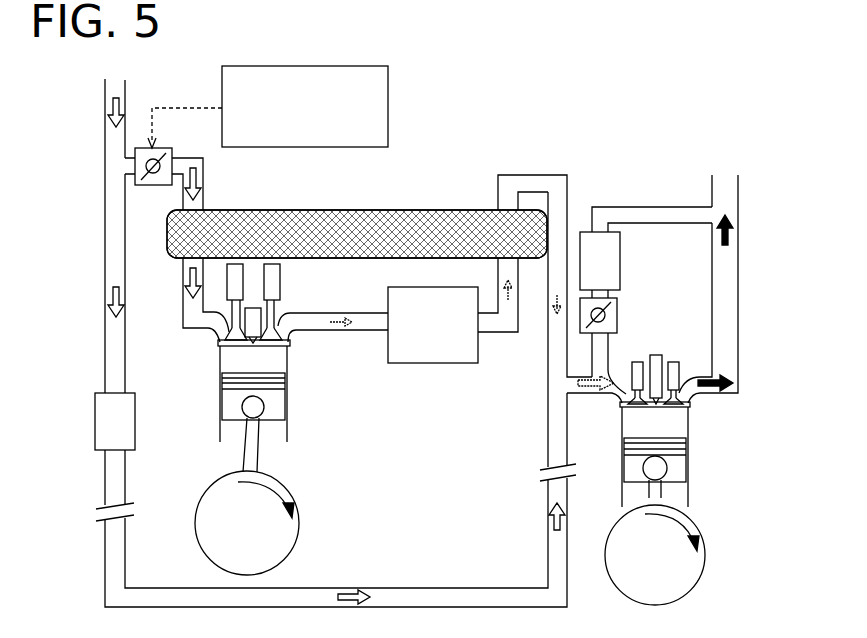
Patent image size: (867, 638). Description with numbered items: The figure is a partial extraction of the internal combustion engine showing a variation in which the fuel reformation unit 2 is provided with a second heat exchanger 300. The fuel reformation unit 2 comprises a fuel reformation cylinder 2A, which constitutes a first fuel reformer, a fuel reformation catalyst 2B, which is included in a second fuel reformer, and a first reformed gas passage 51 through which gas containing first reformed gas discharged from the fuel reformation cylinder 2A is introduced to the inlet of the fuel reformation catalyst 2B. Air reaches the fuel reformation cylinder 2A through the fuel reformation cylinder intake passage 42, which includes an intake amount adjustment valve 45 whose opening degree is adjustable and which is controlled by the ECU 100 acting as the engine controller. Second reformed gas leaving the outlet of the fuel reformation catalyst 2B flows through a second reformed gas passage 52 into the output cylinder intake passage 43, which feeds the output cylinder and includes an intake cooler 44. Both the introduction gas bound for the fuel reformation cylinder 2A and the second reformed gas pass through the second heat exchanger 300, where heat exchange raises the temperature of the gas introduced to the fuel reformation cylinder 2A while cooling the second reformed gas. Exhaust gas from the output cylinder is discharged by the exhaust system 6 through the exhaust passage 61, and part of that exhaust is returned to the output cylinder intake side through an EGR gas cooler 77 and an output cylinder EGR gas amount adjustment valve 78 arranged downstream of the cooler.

The ECU 100 is at (389, 112).
The second heat exchanger 300 is at (428, 210).
The intake amount adjustment valve 45 is at (155, 188).
The output cylinder intake passage 43 is at (110, 268).
The intake cooler 44 is at (95, 422).
The fuel reformation cylinder intake passage 42 is at (190, 332).
The fuel reformation unit 2 is at (336, 419).
The fuel reformation cylinder 2A is at (297, 398).
The fuel reformation catalyst 2B is at (441, 368).
The first reformed gas passage 51 is at (323, 333).
The second reformed gas passage 52 is at (500, 334).
The exhaust system 6 is at (688, 289).
The exhaust passage 61 is at (730, 278).
The EGR gas cooler 77 is at (621, 276).
The output cylinder EGR gas amount adjustment valve 78 is at (618, 316).